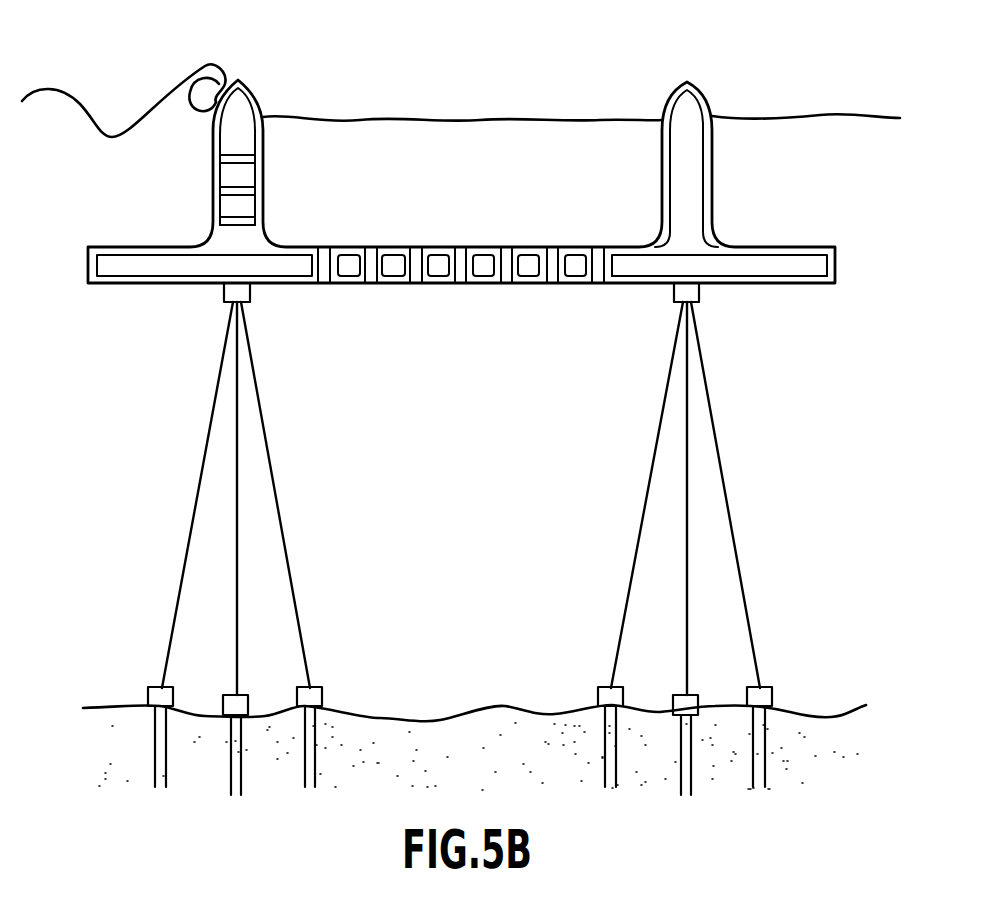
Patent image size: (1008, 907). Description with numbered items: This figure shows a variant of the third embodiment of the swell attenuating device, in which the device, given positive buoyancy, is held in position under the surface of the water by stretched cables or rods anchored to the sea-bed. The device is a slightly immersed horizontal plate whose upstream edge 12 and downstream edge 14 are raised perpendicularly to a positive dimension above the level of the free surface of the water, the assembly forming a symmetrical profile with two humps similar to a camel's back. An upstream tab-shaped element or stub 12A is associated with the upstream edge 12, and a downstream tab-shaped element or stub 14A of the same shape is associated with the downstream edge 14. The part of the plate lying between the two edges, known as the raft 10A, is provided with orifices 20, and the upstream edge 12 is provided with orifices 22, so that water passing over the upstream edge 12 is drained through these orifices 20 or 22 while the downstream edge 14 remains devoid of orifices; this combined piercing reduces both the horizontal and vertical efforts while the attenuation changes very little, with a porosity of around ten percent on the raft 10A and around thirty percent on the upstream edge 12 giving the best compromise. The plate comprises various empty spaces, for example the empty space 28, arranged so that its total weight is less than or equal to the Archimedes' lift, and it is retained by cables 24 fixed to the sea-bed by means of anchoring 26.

The raft 10A is at (633, 243).
The upstream edge 12 is at (240, 90).
The upstream tab-shaped element 12A is at (117, 250).
The downstream edge 14 is at (687, 94).
The downstream tab-shaped element 14A is at (770, 245).
The orifices 20 is at (462, 248).
The orifices 22 is at (252, 220).
The cables 24 is at (277, 497).
The anchoring 26 is at (318, 688).
The empty space 28 is at (705, 262).